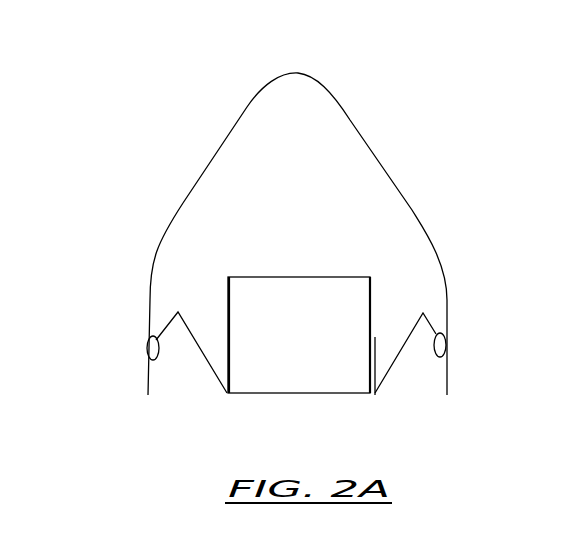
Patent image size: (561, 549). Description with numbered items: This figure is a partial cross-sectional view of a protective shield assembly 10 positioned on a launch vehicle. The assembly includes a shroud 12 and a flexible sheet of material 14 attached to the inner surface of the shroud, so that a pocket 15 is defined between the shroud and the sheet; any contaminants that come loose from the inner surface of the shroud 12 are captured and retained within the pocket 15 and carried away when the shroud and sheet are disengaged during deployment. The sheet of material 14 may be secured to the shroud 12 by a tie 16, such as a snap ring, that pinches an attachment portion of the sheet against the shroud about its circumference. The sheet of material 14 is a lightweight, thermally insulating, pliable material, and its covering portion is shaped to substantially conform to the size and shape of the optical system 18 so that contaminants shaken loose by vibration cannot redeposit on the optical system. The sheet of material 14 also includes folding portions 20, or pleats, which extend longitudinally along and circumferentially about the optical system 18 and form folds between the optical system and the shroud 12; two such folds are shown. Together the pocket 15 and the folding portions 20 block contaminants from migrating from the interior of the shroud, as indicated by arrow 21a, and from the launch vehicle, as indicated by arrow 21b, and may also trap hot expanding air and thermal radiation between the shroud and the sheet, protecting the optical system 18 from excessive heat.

The protective shield assembly 10 is at (310, 263).
The shroud 12 is at (164, 243).
The flexible sheet of material 14 is at (375, 352).
The pocket 15 is at (232, 185).
The tie 16 is at (453, 328).
The optical system 18 is at (268, 394).
The folding portions 20 is at (178, 312).
The arrow 21a is at (203, 286).
The arrow 21b is at (419, 367).